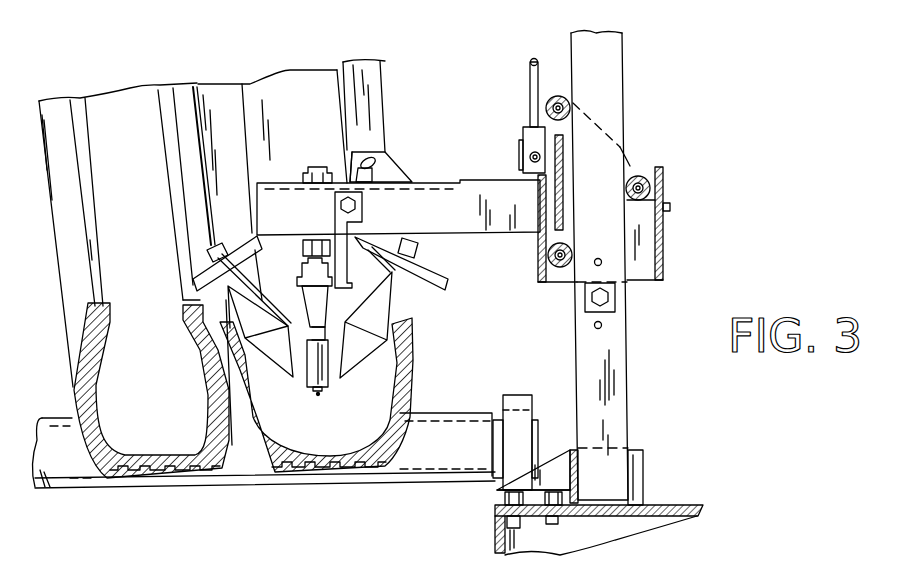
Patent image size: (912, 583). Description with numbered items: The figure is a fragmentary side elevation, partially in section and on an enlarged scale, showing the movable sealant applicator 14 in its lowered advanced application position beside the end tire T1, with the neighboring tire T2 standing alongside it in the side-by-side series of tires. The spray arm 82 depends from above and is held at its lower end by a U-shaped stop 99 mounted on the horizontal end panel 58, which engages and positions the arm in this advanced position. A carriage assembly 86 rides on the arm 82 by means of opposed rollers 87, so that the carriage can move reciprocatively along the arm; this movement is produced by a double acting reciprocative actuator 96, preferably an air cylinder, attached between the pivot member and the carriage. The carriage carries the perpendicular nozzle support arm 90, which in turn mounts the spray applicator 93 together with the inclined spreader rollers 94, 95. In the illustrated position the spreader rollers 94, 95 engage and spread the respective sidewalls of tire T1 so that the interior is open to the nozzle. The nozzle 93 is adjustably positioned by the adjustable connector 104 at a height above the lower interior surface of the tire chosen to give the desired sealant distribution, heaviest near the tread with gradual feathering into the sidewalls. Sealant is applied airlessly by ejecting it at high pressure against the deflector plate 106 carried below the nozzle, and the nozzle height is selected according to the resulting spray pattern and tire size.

The movable sealant applicator 14 is at (470, 96).
The horizontal end panel 58 is at (680, 503).
The spray arm 82 is at (610, 67).
The carriage assembly 86 is at (665, 253).
The opposed rollers 87 is at (557, 97).
The nozzle support arm 90 is at (470, 184).
The spray applicator 93 is at (315, 373).
The inclined spreader roller 94 is at (365, 372).
The inclined spreader roller 95 is at (217, 363).
The double acting reciprocative actuator 96 is at (530, 72).
The U-shaped stop 99 is at (562, 457).
The adjustable connector 104 is at (357, 205).
The deflector plate 106 is at (321, 391).
The end tire T1 is at (317, 462).
The tire T2 is at (145, 473).